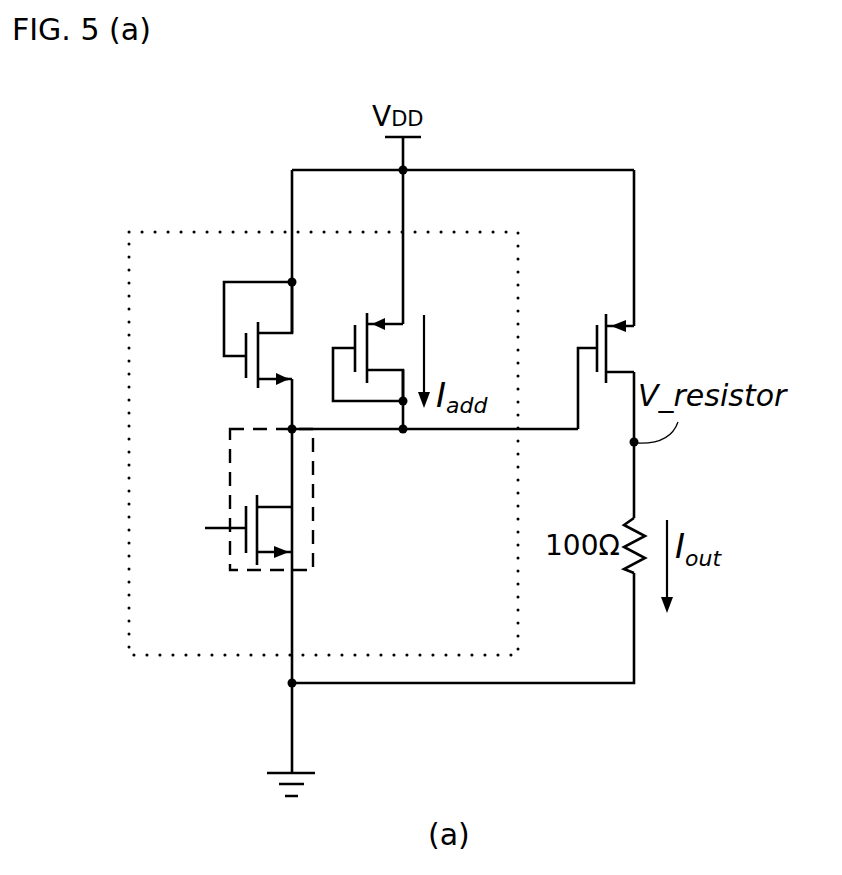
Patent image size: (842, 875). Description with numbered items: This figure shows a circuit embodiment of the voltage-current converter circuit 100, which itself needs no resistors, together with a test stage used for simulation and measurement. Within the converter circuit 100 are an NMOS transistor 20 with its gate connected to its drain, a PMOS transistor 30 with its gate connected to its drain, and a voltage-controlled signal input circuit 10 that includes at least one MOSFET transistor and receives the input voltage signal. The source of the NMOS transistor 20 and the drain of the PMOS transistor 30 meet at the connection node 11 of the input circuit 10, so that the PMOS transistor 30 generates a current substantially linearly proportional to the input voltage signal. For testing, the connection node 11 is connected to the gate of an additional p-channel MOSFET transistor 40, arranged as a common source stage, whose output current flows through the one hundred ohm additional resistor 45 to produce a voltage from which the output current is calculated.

The voltage-current converter circuit 100 is at (247, 230).
The voltage-controlled signal input circuit 10 is at (272, 572).
The connection node 11 is at (288, 427).
The NMOS transistor 20 is at (270, 325).
The PMOS transistor 30 is at (382, 315).
The additional p-channel MOSFET transistor 40 is at (620, 317).
The additional resistor 45 is at (622, 570).